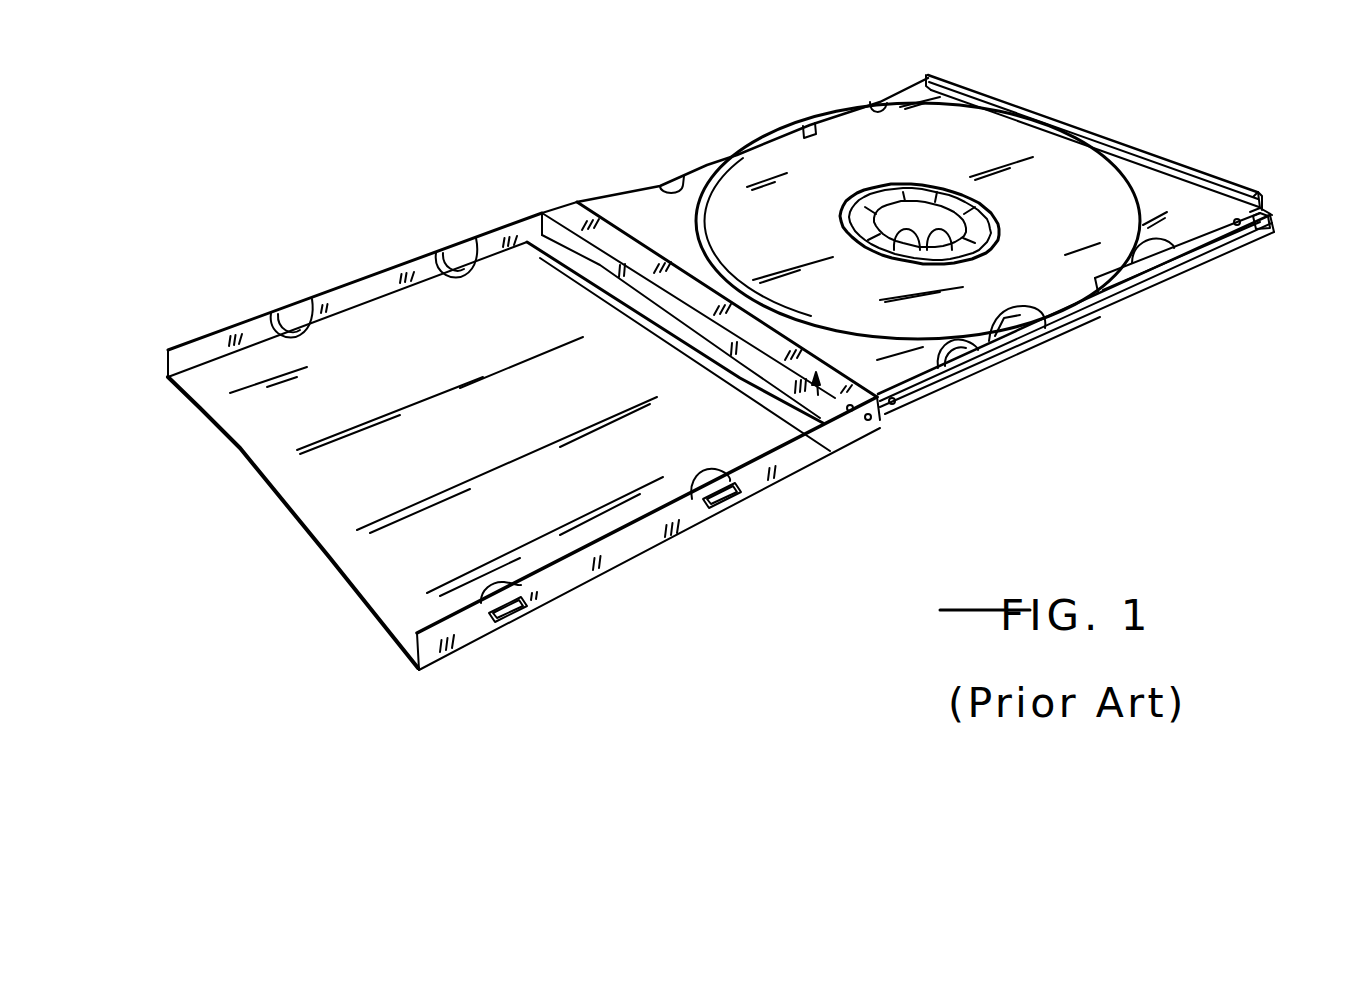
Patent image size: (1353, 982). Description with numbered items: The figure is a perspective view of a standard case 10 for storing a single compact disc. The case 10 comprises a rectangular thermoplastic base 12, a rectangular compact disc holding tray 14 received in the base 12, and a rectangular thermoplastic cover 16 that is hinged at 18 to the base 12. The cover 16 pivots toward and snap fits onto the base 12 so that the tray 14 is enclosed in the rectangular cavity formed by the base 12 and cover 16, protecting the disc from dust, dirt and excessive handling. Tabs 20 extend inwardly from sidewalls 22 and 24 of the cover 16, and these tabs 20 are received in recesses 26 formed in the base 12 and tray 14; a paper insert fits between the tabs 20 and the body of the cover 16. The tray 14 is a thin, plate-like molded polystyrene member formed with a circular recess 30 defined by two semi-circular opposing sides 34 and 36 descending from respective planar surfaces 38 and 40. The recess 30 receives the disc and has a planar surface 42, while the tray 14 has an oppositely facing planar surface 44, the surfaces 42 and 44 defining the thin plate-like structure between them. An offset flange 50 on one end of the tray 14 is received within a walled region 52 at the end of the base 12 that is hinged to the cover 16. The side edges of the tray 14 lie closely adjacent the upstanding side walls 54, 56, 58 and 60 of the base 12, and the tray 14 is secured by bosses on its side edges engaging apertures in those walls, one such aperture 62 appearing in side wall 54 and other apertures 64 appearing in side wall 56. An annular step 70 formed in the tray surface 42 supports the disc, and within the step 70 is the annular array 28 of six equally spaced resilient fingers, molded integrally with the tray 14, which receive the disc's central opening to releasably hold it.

The case 10 is at (550, 160).
The base 12 is at (1080, 333).
The compact disc holding tray 14 is at (705, 168).
The cover 16 is at (273, 507).
The hinge 18 is at (552, 205).
The tabs 20 is at (452, 278).
The sidewall 22 is at (583, 573).
The sidewall 24 is at (218, 330).
The recesses 26 is at (664, 178).
The annular array of fingers 28 is at (920, 205).
The circular recess 30 is at (999, 143).
The semi-circular opposing side 34 is at (1043, 327).
The semi-circular opposing side 36 is at (1088, 155).
The planar surface 38 is at (908, 372).
The planar surface 40 is at (1150, 196).
The planar surface of recess 42 is at (1073, 241).
The oppositely facing planar surface 44 is at (1098, 315).
The offset flange 50 is at (845, 370).
The walled region 52 is at (543, 208).
The side wall 54 is at (948, 393).
The side wall 56 is at (1263, 210).
The side wall 58 is at (615, 197).
The side wall 60 is at (808, 124).
The aperture 62 is at (893, 405).
The apertures 64 is at (1245, 228).
The annular step 70 is at (967, 235).